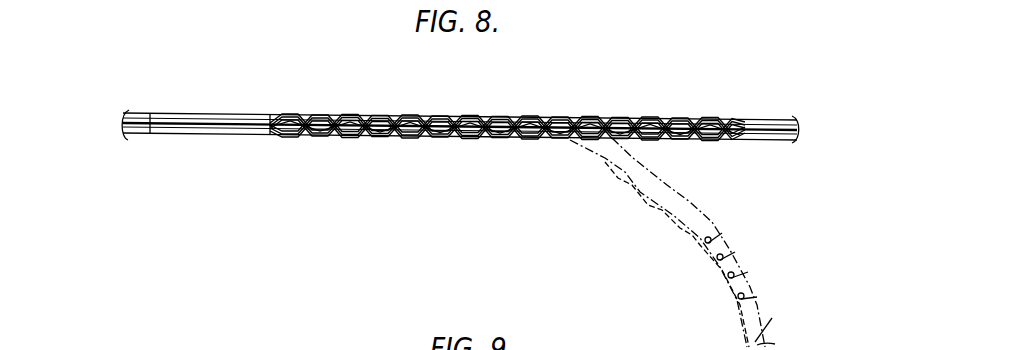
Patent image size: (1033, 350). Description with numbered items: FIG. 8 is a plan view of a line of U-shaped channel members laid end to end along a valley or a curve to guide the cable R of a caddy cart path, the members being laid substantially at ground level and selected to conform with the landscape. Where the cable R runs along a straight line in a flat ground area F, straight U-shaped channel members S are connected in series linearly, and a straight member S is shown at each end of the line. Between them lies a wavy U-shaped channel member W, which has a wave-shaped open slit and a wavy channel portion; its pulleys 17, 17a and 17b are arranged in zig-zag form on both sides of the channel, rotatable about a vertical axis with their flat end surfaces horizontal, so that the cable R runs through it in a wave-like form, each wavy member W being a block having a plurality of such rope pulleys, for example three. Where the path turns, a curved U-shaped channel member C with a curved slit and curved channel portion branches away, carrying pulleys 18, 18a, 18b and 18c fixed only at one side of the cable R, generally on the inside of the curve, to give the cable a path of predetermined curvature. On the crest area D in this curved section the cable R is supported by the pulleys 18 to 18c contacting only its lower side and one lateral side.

The straight U-shaped channel member S is at (173, 118).
The flat ground area F is at (229, 117).
The cable R is at (261, 116).
The wavy U-shaped channel member W is at (418, 116).
The crest area D is at (716, 113).
The curved U-shaped channel member C is at (745, 253).
The pulley 17 is at (405, 140).
The pulley 17a is at (436, 140).
The pulley 17b is at (505, 153).
The pulley 18 is at (705, 243).
The pulley 18a is at (718, 260).
The pulley 18b is at (730, 279).
The pulley 18c is at (739, 300).